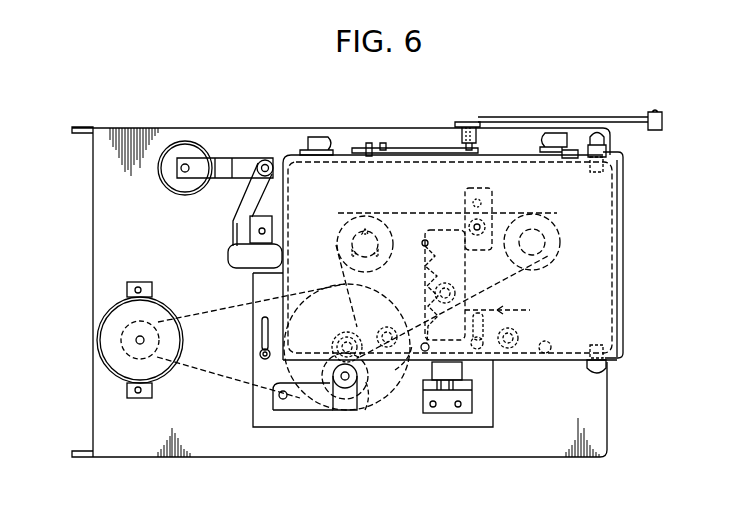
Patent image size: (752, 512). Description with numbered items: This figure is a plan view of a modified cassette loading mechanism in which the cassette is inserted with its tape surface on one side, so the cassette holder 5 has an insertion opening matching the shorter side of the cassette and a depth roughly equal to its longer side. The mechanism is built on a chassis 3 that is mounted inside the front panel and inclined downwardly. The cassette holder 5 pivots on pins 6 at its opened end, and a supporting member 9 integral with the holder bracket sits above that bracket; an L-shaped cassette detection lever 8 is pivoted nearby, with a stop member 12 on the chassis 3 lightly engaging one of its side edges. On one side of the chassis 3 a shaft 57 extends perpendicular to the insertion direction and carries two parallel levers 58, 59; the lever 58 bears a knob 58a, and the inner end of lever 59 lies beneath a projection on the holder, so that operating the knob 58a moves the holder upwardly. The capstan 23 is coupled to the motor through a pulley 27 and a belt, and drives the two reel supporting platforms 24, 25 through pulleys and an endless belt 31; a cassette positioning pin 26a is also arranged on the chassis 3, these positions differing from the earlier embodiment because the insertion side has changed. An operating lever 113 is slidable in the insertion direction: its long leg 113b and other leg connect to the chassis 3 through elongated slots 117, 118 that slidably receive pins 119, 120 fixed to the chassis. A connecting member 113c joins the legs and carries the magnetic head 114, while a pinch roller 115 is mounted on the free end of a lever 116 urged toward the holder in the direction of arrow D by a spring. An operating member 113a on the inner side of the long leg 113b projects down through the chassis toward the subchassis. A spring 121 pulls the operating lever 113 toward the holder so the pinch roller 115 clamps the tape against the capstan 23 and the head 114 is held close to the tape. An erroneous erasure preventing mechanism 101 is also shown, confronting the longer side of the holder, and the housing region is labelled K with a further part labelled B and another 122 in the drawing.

The chassis 3 is at (197, 440).
The cassette housing K is at (624, 238).
The supporting member 9 is at (208, 162).
The roller arm B is at (245, 167).
The cassette detection lever 8 is at (236, 221).
The stop member 12 is at (250, 238).
The lever 58 is at (570, 108).
The knob 58a is at (655, 112).
The shaft 57 is at (468, 122).
The lever 59 is at (420, 148).
The cassette holder 5 is at (370, 145).
The erroneous erasure preventing mechanism 101 is at (318, 140).
The pins 6 is at (597, 132).
The reel supporting platform 24 is at (380, 225).
The reel supporting platform 25 is at (548, 243).
The capstan 23 is at (348, 337).
The long leg 113b is at (486, 192).
The elongated slot 117 is at (482, 204).
The pin 119 is at (469, 217).
The spring 121 is at (426, 242).
The operating member 113a is at (425, 285).
The endless belt 31 is at (500, 292).
The operating lever 113 is at (500, 312).
The motor 122 is at (100, 333).
The connecting member 113c is at (405, 417).
The elongated slot 118 is at (262, 330).
The pin 120 is at (260, 354).
The arrow D is at (265, 403).
The lever 116 is at (296, 412).
The pinch roller 115 is at (360, 413).
The pulley 27 is at (375, 410).
The cassette positioning pin 26a is at (410, 368).
The magnetic head 114 is at (502, 443).